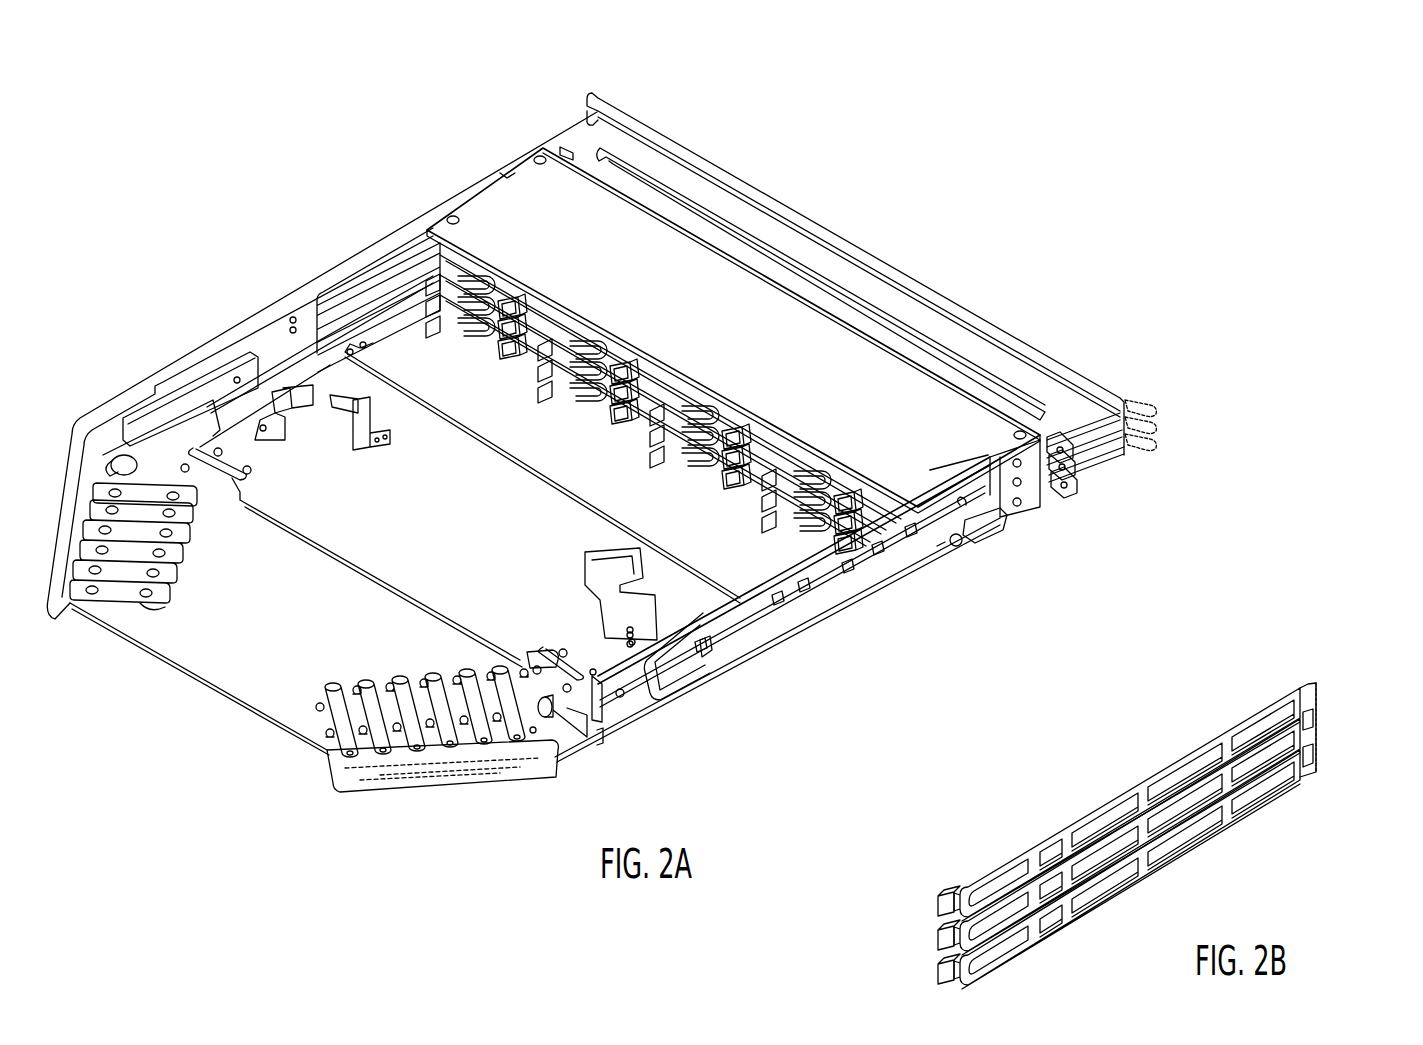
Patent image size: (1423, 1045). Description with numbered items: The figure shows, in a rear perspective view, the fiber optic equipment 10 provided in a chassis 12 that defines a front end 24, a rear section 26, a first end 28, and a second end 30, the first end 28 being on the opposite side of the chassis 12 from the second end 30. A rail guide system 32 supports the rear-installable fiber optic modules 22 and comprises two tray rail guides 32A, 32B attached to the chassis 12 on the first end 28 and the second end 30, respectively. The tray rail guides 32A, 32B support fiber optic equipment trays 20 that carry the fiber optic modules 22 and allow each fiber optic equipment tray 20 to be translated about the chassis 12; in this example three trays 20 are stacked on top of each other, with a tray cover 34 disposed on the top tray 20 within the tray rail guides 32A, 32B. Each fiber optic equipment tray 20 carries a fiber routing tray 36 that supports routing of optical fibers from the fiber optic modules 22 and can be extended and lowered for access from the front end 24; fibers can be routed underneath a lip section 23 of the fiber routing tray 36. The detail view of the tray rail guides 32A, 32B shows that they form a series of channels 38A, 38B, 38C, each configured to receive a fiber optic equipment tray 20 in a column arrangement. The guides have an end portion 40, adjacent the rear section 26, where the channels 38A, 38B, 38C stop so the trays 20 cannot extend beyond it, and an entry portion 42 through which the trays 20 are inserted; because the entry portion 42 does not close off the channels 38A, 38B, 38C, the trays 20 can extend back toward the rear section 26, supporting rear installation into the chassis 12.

In FIG. 2A, the fiber optic equipment 10 is at (520, 140).
In FIG. 2A, the chassis 12 is at (785, 641).
In FIG. 2A, the fiber optic equipment tray 20 is at (478, 180).
In FIG. 2A, the fiber optic module 22 is at (563, 373).
In FIG. 2A, the lip section 23 is at (1040, 365).
In FIG. 2A, the front end 24 is at (992, 289).
In FIG. 2A, the rear section 26 is at (458, 549).
In FIG. 2A, the first end 28 is at (880, 584).
In FIG. 2A, the second end 30 is at (216, 318).
In FIG. 2A, the rail guide system 32 is at (626, 510).
In FIG. 2A, the tray rail guide 32A is at (800, 562).
In FIG. 2B, the tray rail guide 32A is at (1106, 743).
In FIG. 2A, the tray rail guide 32B is at (407, 318).
In FIG. 2B, the tray rail guide 32B is at (1120, 803).
In FIG. 2A, the tray cover 34 is at (778, 364).
In FIG. 2A, the fiber routing tray 36 is at (1120, 465).
In FIG. 2B, the channel 38A is at (1255, 722).
In FIG. 2B, the channel 38B is at (1280, 743).
In FIG. 2B, the channel 38C is at (1263, 803).
In FIG. 2B, the end portion 40 is at (1318, 698).
In FIG. 2B, the entry portion 42 is at (936, 934).